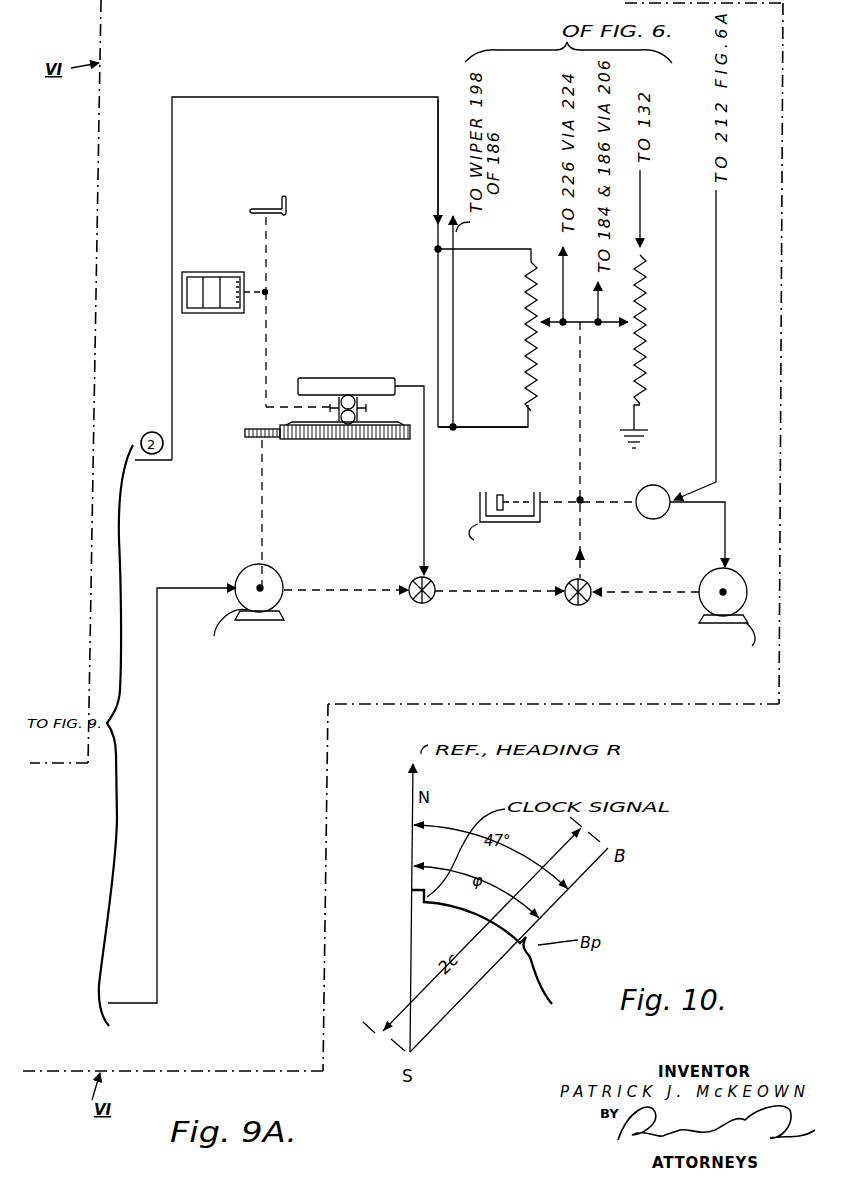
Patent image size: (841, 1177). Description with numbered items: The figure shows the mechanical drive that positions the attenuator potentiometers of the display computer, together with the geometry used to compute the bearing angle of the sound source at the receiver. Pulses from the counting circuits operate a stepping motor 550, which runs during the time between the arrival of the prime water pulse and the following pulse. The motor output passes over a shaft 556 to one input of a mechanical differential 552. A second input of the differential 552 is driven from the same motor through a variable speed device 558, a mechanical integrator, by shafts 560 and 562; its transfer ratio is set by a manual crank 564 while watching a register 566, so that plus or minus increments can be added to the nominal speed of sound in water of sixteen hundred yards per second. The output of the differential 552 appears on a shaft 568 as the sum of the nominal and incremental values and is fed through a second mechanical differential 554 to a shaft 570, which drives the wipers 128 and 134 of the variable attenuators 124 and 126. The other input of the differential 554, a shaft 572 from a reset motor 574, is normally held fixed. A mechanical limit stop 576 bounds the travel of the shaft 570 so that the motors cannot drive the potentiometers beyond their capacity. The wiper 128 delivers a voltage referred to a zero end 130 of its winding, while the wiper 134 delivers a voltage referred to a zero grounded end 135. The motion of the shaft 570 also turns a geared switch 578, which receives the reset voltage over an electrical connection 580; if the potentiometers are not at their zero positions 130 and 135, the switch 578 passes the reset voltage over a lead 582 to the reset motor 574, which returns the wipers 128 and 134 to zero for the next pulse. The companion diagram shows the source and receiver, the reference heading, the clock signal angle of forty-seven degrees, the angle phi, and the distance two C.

The variable attenuator 124 is at (524, 383).
The variable attenuator 126 is at (646, 362).
The wiper 128 is at (556, 327).
The zero end 130 is at (530, 426).
The wiper 134 is at (604, 327).
The zero grounded end 135 is at (637, 419).
The stepping motor 550 is at (236, 580).
The mechanical differential 552 is at (414, 604).
The mechanical differential 554 is at (574, 606).
The shaft 556 is at (338, 592).
The variable speed device 558 is at (336, 378).
The shaft 560 is at (427, 518).
The shaft 562 is at (262, 522).
The manual crank 564 is at (250, 212).
The register 566 is at (226, 258).
The shaft 568 is at (495, 594).
The shaft 570 is at (582, 538).
The shaft 572 is at (651, 595).
The reset motor 574 is at (760, 556).
The mechanical limit stop 576 is at (484, 492).
The geared switch 578 is at (678, 470).
The electrical connection 580 is at (716, 268).
The lead 582 is at (730, 521).